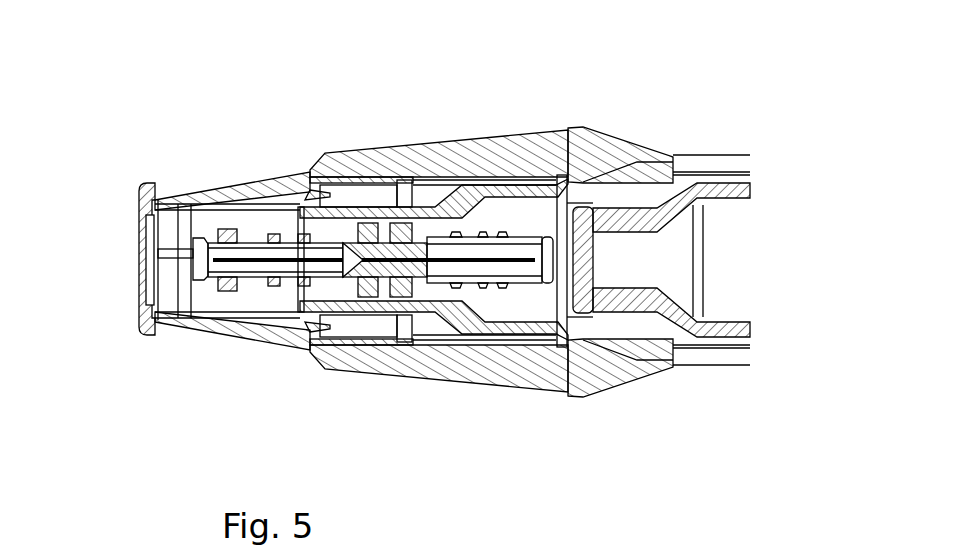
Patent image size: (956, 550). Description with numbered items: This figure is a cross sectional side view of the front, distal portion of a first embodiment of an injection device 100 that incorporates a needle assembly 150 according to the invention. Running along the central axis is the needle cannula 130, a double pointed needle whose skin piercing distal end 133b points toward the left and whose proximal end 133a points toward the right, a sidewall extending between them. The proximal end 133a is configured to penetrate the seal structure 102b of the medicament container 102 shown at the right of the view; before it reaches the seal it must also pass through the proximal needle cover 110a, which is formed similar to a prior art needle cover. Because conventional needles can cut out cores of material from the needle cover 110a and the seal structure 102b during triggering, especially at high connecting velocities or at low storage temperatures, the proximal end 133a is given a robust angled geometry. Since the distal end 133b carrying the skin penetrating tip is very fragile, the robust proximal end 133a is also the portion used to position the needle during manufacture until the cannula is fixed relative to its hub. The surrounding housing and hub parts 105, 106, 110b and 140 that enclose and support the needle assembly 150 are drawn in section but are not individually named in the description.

The injection device assembly 100 is at (446, 237).
The medicament container 102 is at (690, 254).
The seal structure 102b is at (663, 314).
The sleeve 105 is at (237, 309).
The housing 106 is at (444, 301).
The proximal needle cover 110a is at (606, 317).
The proximal end cap 110b is at (141, 303).
The needle cannula 130 is at (380, 220).
The proximal end 133a is at (518, 163).
The skin piercing distal end 133b is at (236, 187).
The piston 140 is at (360, 338).
The needle assembly 150 is at (331, 194).